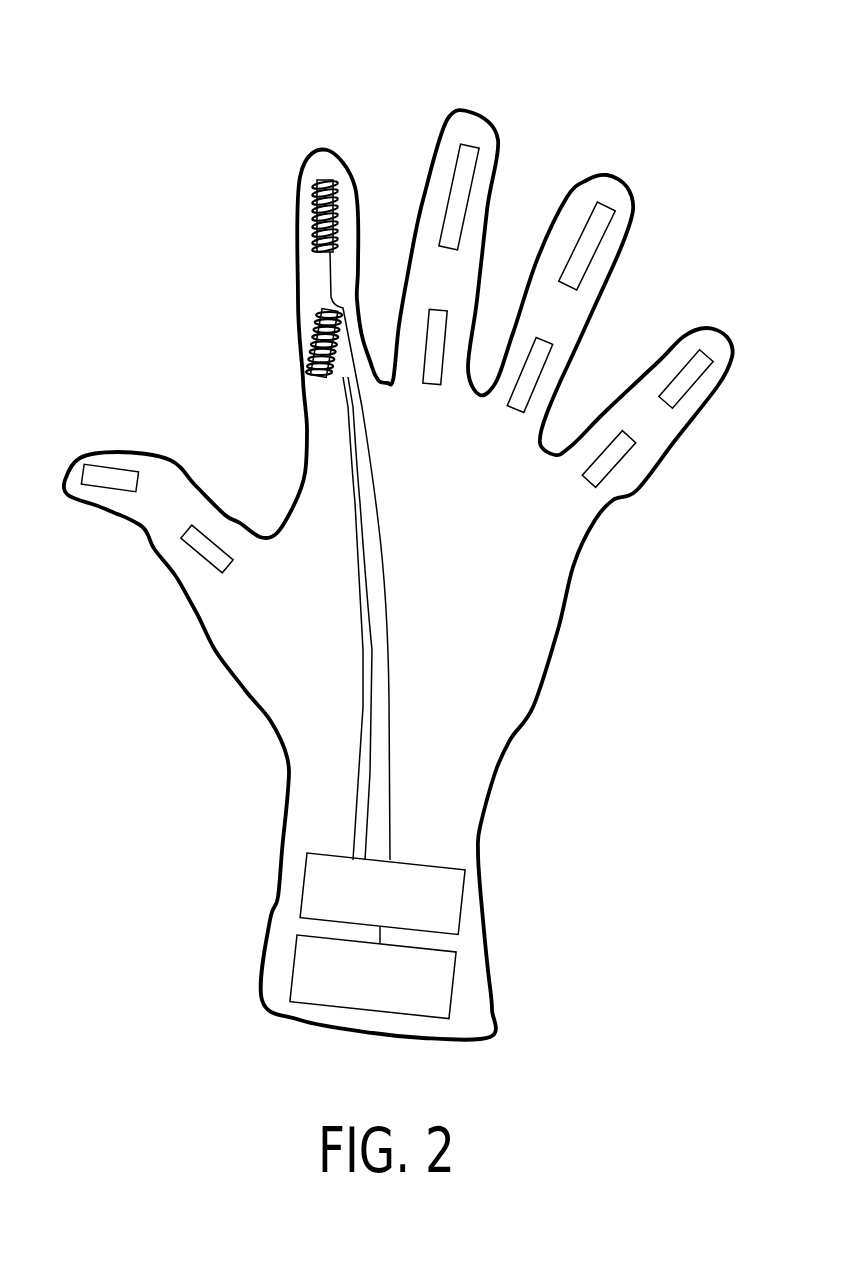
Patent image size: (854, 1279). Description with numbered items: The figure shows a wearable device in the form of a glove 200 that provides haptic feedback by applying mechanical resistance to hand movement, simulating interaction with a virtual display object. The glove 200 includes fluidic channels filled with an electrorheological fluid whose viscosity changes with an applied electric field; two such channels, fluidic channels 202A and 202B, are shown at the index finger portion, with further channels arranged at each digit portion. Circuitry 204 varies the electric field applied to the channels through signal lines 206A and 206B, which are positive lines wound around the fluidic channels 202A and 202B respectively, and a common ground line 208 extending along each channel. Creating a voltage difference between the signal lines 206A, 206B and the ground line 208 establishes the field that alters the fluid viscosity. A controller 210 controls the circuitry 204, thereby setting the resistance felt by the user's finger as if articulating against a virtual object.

The glove 200 is at (396, 62).
The fluidic channel 202A is at (322, 313).
The fluidic channel 202B is at (313, 178).
The circuitry 204 is at (384, 885).
The signal line 206A is at (370, 773).
The signal line 206B is at (392, 817).
The ground line 208 is at (363, 707).
The controller 210 is at (373, 977).